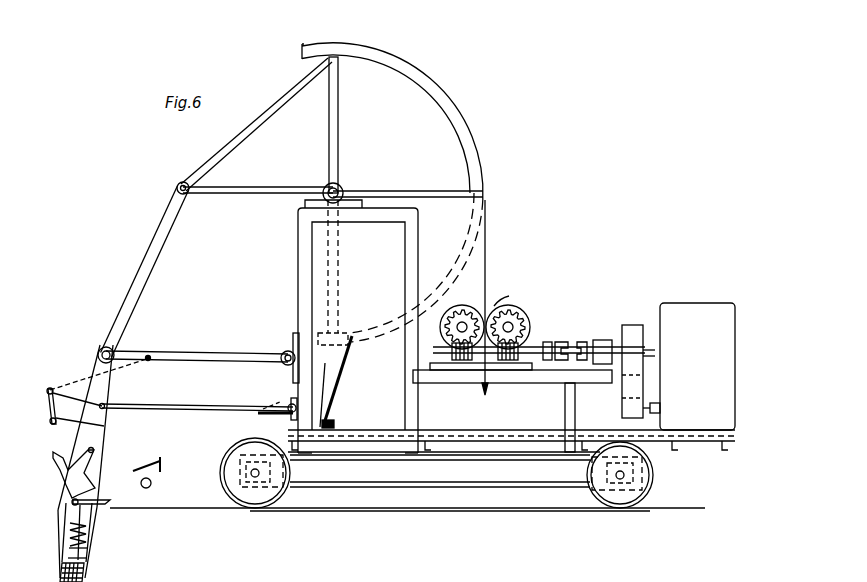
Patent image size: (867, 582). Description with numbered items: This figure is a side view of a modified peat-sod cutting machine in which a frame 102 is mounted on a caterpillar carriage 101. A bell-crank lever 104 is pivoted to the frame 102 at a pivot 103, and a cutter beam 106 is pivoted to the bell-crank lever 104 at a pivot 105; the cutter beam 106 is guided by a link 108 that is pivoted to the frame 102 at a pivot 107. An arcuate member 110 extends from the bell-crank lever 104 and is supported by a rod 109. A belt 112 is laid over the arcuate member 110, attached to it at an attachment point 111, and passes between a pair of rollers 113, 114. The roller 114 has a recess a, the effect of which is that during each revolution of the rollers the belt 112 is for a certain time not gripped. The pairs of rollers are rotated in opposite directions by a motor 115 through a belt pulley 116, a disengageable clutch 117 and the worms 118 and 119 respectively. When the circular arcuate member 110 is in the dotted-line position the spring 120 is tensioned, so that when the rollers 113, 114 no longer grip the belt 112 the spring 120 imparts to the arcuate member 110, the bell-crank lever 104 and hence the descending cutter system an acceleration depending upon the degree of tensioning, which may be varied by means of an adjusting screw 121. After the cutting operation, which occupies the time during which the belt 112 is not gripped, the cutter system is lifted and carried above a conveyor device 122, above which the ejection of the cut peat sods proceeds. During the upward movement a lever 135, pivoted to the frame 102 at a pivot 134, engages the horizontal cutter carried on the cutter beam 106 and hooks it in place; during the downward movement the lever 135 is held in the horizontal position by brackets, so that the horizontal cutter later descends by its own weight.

The caterpillar carriage 101 is at (654, 472).
The frame 102 is at (418, 245).
The pivot 103 is at (341, 189).
The bell-crank lever 104 is at (290, 99).
The pivot 105 is at (177, 186).
The cutter beam 106 is at (160, 278).
The pivot 107 is at (284, 353).
The link 108 is at (207, 345).
The rod 109 is at (411, 191).
The arcuate member 110 is at (450, 106).
The belt attachment point 111 is at (306, 48).
The belt 112 is at (486, 250).
The roller 113 is at (466, 305).
The roller 114 is at (526, 312).
The motor 115 is at (737, 402).
The belt pulley 116 is at (631, 327).
The disengageable clutch 117 is at (570, 343).
The worm 118 is at (508, 362).
The worm 119 is at (462, 362).
The spring 120 is at (334, 395).
The adjusting screw 121 is at (322, 385).
The conveyor device 122 is at (161, 466).
The pivot 134 is at (287, 404).
The lever 135 is at (198, 404).
The recess a is at (507, 295).